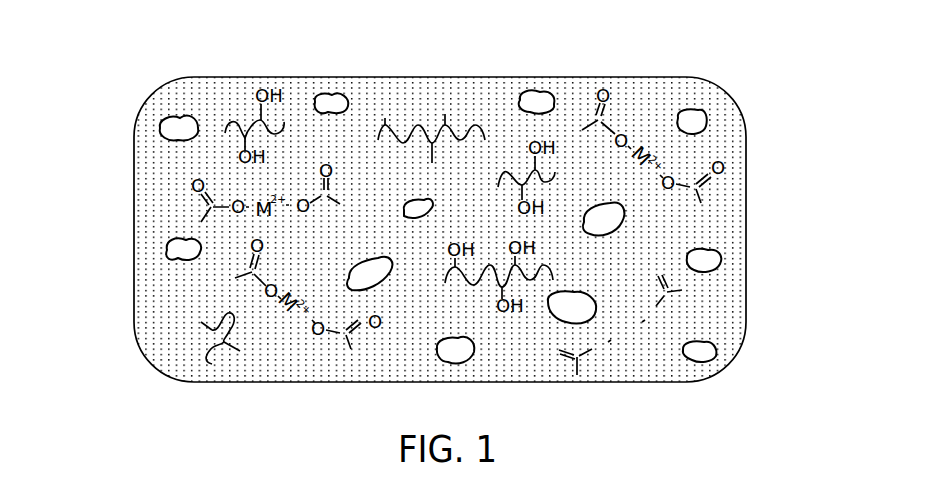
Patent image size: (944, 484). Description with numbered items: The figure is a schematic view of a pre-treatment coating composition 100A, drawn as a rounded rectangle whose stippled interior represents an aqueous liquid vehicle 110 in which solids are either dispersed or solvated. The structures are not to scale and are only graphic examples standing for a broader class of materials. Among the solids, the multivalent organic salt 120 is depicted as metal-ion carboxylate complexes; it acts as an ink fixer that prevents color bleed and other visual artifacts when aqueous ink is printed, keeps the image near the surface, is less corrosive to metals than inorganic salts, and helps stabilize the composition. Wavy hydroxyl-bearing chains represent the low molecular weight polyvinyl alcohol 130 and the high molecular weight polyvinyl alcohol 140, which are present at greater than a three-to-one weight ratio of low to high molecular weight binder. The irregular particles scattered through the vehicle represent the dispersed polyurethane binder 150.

The pre-treatment coating composition 100A is at (181, 41).
The aqueous liquid vehicle 110 is at (728, 237).
The multivalent organic salt 120 is at (641, 341).
The low molecular weight polyvinyl alcohol 130 is at (199, 346).
The high molecular weight polyvinyl alcohol 140 is at (426, 116).
The dispersed polyurethane binder 150 is at (697, 120).